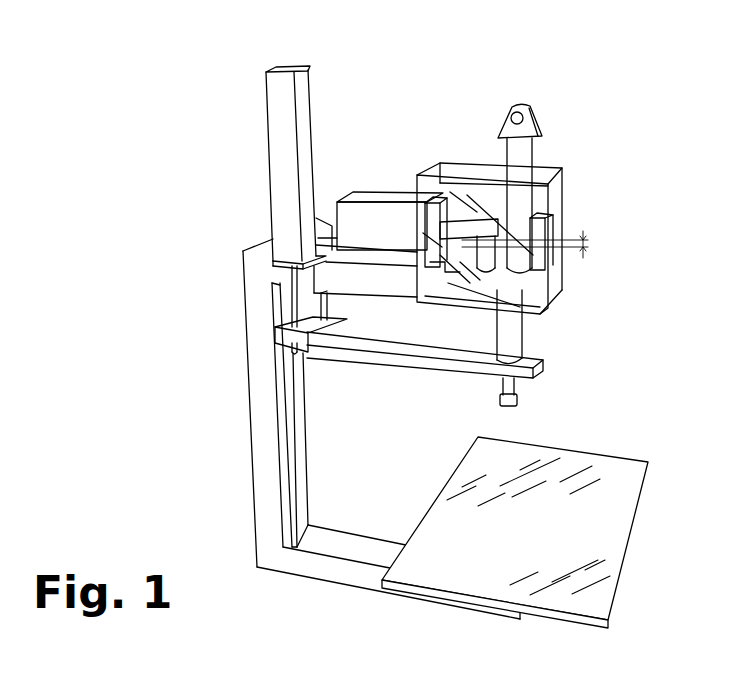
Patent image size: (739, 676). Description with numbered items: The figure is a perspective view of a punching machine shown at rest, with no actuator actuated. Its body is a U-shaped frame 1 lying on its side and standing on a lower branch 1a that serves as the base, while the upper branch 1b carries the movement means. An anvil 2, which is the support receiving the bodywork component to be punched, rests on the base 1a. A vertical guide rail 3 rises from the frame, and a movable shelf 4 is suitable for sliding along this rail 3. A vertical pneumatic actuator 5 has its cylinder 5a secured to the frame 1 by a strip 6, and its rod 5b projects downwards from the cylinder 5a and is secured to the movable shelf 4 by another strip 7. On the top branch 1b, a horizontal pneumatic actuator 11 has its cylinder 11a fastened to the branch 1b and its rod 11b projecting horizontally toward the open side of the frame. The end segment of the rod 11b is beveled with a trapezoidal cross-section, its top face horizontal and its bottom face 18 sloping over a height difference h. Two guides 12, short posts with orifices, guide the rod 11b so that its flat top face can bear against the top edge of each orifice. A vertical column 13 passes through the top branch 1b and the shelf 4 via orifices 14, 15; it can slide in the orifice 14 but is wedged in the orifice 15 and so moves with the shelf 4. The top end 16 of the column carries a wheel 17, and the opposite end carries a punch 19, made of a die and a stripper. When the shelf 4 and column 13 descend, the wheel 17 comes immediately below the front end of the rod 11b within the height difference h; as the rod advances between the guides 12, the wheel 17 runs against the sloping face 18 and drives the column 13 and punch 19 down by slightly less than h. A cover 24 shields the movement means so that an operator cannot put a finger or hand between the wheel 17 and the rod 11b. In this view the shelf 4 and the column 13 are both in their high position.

The frame 1 is at (262, 415).
The base branch 1a is at (300, 563).
The top branch 1b is at (380, 282).
The anvil 2 is at (602, 530).
The vertical guide rail 3 is at (297, 487).
The movable shelf 4 is at (345, 352).
The vertical pneumatic actuator 5 is at (240, 141).
The cylinder 5a is at (284, 120).
The rod 5b is at (271, 309).
The strip 6 is at (280, 223).
The strip 7 is at (310, 335).
The horizontal pneumatic actuator 11 is at (393, 190).
The cylinder 11a is at (380, 217).
The rod 11b is at (453, 230).
The guides 12 is at (500, 222).
The vertical column 13 is at (517, 333).
The orifice 14 is at (542, 295).
The orifice 15 is at (527, 352).
The top end of the column 16 is at (560, 108).
The wheel 17 is at (520, 107).
The sloping bottom face 18 is at (445, 255).
The punch 19 is at (517, 403).
The cover 24 is at (565, 180).
The height difference h is at (536, 245).